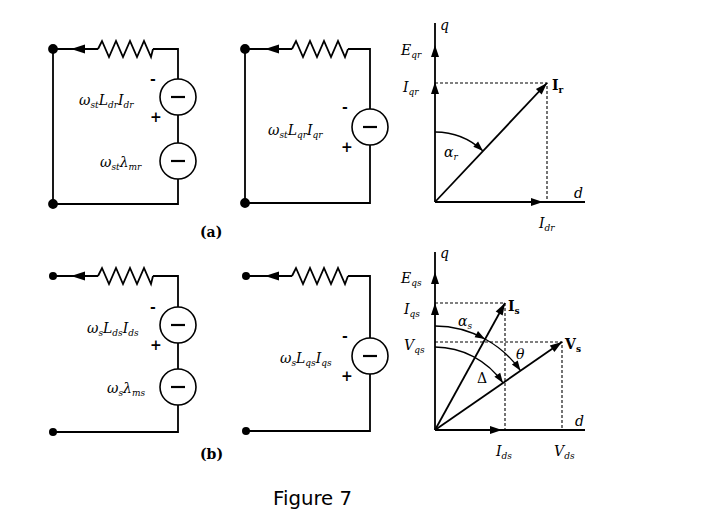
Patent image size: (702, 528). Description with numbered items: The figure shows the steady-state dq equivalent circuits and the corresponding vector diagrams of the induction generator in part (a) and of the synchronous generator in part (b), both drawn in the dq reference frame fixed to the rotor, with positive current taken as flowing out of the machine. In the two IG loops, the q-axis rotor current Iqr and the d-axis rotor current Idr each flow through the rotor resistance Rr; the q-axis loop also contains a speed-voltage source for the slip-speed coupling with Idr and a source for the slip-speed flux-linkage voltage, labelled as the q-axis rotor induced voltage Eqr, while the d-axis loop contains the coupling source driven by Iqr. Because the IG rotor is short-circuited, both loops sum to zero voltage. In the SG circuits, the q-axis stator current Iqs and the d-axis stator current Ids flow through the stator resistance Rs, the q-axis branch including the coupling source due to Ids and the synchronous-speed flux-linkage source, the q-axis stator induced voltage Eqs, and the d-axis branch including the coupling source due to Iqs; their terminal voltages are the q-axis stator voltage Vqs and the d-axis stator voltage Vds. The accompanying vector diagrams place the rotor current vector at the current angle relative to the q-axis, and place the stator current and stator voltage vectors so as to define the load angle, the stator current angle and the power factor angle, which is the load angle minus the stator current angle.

The rotor resistance Rr is at (223, 37).
The stator resistance Rs is at (223, 264).
The q-axis rotor current Iqr is at (76, 37).
The d-axis rotor current Idr is at (270, 37).
The q-axis stator current Iqs is at (76, 265).
The d-axis stator current Ids is at (270, 265).
The q-axis rotor induced voltage Eqr is at (193, 159).
The q-axis stator induced voltage Eqs is at (193, 385).
The q-axis stator voltage Vqs is at (60, 354).
The d-axis stator voltage Vds is at (247, 353).